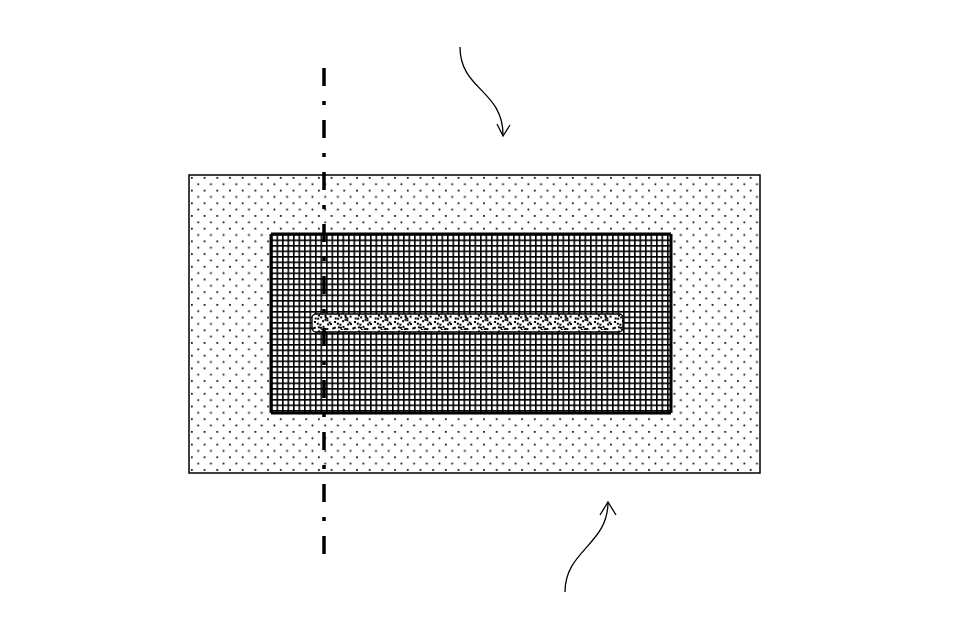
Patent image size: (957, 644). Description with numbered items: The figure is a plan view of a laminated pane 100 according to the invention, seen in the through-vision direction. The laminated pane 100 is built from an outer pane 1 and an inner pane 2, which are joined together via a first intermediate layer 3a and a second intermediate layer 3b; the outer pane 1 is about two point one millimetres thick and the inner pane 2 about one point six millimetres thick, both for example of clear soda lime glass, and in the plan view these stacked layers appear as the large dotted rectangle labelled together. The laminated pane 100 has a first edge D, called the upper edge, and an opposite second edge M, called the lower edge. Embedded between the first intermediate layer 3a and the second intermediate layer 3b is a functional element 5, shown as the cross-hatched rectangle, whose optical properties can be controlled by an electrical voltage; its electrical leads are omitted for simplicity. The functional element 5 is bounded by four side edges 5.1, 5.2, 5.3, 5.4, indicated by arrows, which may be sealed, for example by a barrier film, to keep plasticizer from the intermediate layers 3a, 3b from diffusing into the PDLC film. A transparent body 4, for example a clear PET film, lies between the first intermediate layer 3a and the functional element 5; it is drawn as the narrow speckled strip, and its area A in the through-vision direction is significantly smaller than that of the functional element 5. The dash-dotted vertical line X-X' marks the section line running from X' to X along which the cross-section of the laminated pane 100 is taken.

The laminated pane 100 is at (226, 84).
The outer pane 1 is at (402, 287).
The inner pane 2 is at (474, 324).
The first intermediate layer 3a is at (474, 324).
The second intermediate layer 3b is at (188, 183).
The functional element 5 is at (469, 327).
The side edge 5.1 is at (412, 424).
The side edge 5.2 is at (682, 390).
The side edge 5.3 is at (412, 224).
The side edge 5.4 is at (260, 390).
The transparent body 4 is at (311, 318).
The area A is at (419, 220).
The upper edge D is at (483, 73).
The lower edge M is at (585, 562).
The section line end point X is at (329, 312).
The section line end point X' is at (329, 296).